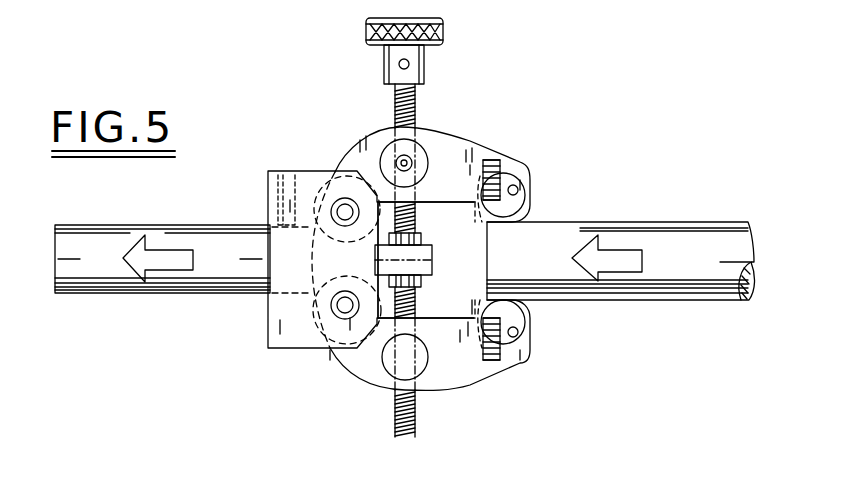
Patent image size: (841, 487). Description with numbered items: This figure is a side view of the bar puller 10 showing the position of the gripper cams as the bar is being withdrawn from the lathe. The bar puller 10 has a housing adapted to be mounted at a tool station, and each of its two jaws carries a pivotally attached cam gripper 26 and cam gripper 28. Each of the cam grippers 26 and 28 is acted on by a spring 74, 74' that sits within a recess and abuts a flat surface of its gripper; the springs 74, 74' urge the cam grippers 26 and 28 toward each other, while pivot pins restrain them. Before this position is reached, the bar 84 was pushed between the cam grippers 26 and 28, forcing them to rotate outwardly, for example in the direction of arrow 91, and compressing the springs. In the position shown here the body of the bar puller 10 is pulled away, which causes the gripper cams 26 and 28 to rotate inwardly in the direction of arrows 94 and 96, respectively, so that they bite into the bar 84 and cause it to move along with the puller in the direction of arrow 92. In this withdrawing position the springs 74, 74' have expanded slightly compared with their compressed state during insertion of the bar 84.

The bar puller 10 is at (330, 130).
The cam gripper 26 is at (522, 210).
The cam gripper 28 is at (513, 304).
The spring 74 is at (429, 307).
The spring 74' is at (431, 222).
The bar 84 is at (648, 228).
The arrow 91 is at (155, 263).
The arrow 92 is at (615, 263).
The arrow 94 is at (506, 193).
The arrow 96 is at (507, 326).